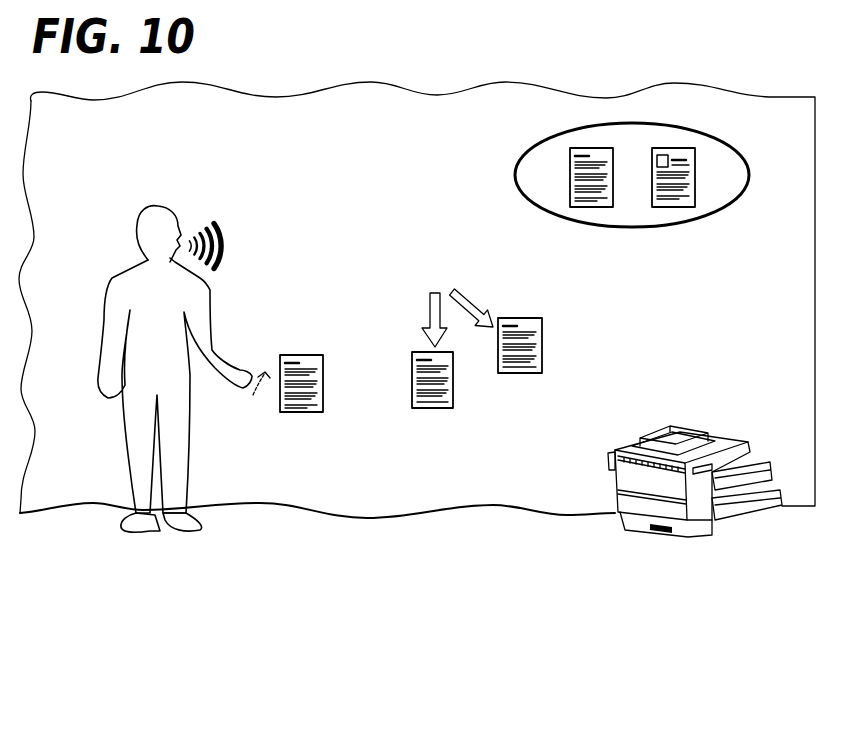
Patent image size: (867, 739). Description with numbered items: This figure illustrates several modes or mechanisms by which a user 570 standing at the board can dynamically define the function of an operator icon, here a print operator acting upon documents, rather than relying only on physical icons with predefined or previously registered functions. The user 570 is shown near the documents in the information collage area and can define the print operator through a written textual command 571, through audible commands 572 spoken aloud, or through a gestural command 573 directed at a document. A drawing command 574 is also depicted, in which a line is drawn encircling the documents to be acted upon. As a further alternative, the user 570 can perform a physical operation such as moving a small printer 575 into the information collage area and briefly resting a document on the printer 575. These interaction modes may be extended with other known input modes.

The user 570 is at (133, 527).
The written textual command 571 is at (411, 238).
The audible commands 572 is at (190, 198).
The gestural command 573 is at (239, 410).
The drawing command 574 is at (633, 227).
The small printer 575 is at (641, 523).